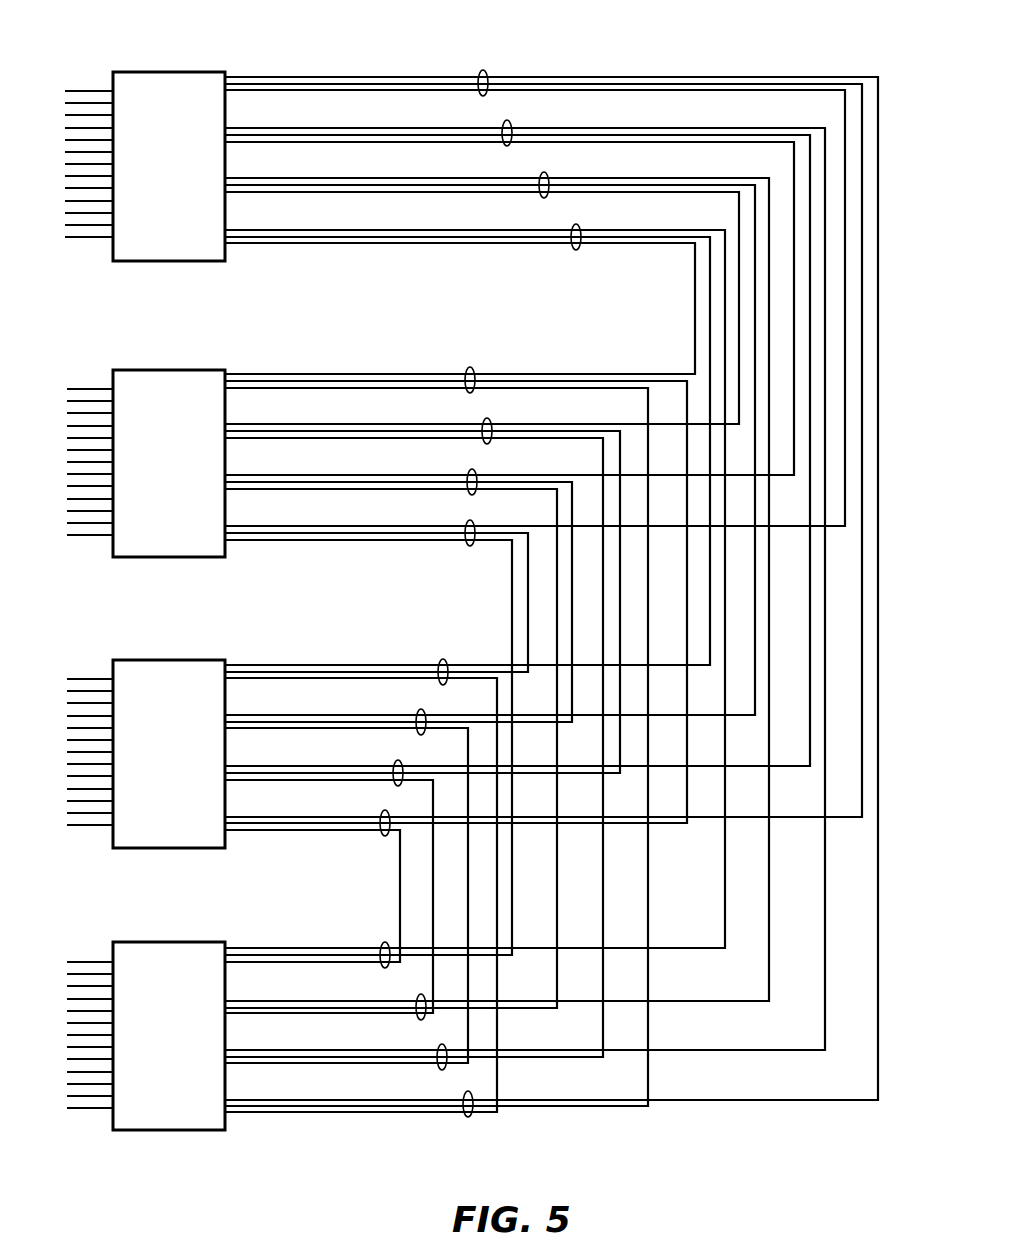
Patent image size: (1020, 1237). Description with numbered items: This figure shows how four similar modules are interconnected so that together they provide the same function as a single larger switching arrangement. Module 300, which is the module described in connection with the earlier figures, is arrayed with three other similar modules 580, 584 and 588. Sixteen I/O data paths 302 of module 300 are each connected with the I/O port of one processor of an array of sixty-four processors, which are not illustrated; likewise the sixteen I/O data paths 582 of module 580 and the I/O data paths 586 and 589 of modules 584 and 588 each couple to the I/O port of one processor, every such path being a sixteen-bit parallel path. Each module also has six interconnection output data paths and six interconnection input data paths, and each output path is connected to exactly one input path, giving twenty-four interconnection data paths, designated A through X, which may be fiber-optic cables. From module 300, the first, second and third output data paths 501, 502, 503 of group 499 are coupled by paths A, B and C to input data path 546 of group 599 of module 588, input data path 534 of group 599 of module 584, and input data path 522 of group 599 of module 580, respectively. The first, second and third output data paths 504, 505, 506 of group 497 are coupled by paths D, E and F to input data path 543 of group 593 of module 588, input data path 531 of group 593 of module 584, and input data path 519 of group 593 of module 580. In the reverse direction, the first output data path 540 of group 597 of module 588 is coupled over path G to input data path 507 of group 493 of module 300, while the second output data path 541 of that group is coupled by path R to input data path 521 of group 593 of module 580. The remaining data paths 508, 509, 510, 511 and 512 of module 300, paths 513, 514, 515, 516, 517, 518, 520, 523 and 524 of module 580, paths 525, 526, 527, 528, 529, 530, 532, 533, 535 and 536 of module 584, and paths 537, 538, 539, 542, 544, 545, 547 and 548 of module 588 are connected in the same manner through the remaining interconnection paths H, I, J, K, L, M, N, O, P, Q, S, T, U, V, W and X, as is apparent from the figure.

The module 300 is at (170, 72).
The I/O data paths 302 is at (95, 90).
The module 580 is at (170, 370).
The I/O data paths 582 is at (92, 389).
The module 584 is at (170, 660).
The I/O data paths 586 is at (78, 679).
The module 588 is at (170, 942).
The I/O data paths 589 is at (80, 962).
The group of input data paths 493 is at (545, 173).
The group of output data paths 497 is at (508, 121).
The group of output data paths 499 is at (483, 70).
The group of input data paths 593 is at (474, 469).
The group of output data paths 597 is at (489, 418).
The group of input data paths 599 is at (472, 367).
The first output data path 501 is at (280, 77).
The second output data path 502 is at (350, 77).
The third output data path 503 is at (427, 77).
The first output data path 504 is at (288, 128).
The second output data path 505 is at (358, 128).
The third output data path 506 is at (509, 203).
The input data path 507 is at (288, 178).
The conductor line 508 is at (356, 178).
The conductor line 509 is at (482, 228).
The conductor line 510 is at (290, 230).
The conductor line 511 is at (358, 230).
The conductor line 512 is at (426, 230).
The conductor line 513 is at (460, 335).
The conductor line 514 is at (456, 483).
The conductor line 515 is at (426, 374).
The conductor line 516 is at (288, 424).
The conductor line 517 is at (356, 424).
The conductor line 518 is at (426, 424).
The input data path 519 is at (290, 475).
The conductor line 520 is at (356, 475).
The input data path 521 is at (426, 475).
The input data path 522 is at (538, 442).
The conductor line 523 is at (356, 526).
The conductor line 524 is at (426, 526).
The conductor line 525 is at (467, 558).
The conductor line 526 is at (385, 652).
The conductor line 527 is at (416, 665).
The conductor line 528 is at (490, 603).
The conductor line 529 is at (410, 677).
The conductor line 530 is at (411, 715).
The input data path 531 is at (517, 608).
The conductor line 532 is at (432, 703).
The conductor line 533 is at (329, 817).
The input data path 534 is at (543, 633).
The conductor line 535 is at (335, 830).
The conductor line 536 is at (335, 823).
The conductor line 537 is at (485, 768).
The conductor line 538 is at (383, 851).
The conductor line 539 is at (324, 924).
The first output data path 540 is at (515, 795).
The second output data path 541 is at (406, 878).
The conductor line 542 is at (396, 1001).
The input data path 543 is at (540, 821).
The conductor line 544 is at (427, 902).
The conductor line 545 is at (346, 969).
The input data path 546 is at (551, 844).
The conductor line 547 is at (462, 947).
The conductor line 548 is at (384, 1003).
The interconnection data path A is at (878, 878).
The interconnection data path B is at (862, 700).
The interconnection data path C is at (845, 528).
The interconnection data path D is at (827, 993).
The interconnection data path E is at (810, 735).
The interconnection data path F is at (793, 172).
The interconnection data path G is at (770, 905).
The interconnection data path H is at (755, 700).
The interconnection data path I is at (737, 217).
The interconnection data path J is at (726, 870).
The interconnection data path K is at (708, 600).
The interconnection data path L is at (693, 318).
The interconnection data path M is at (686, 620).
The interconnection data path N is at (652, 913).
The interconnection data path O is at (620, 730).
The interconnection data path P is at (607, 860).
The interconnection data path Q is at (560, 753).
The interconnection data path R is at (558, 903).
The interconnection data path S is at (513, 702).
The interconnection data path T is at (513, 902).
The interconnection data path U is at (497, 982).
The interconnection data path V is at (468, 875).
The interconnection data path W is at (433, 883).
The interconnection data path X is at (402, 892).